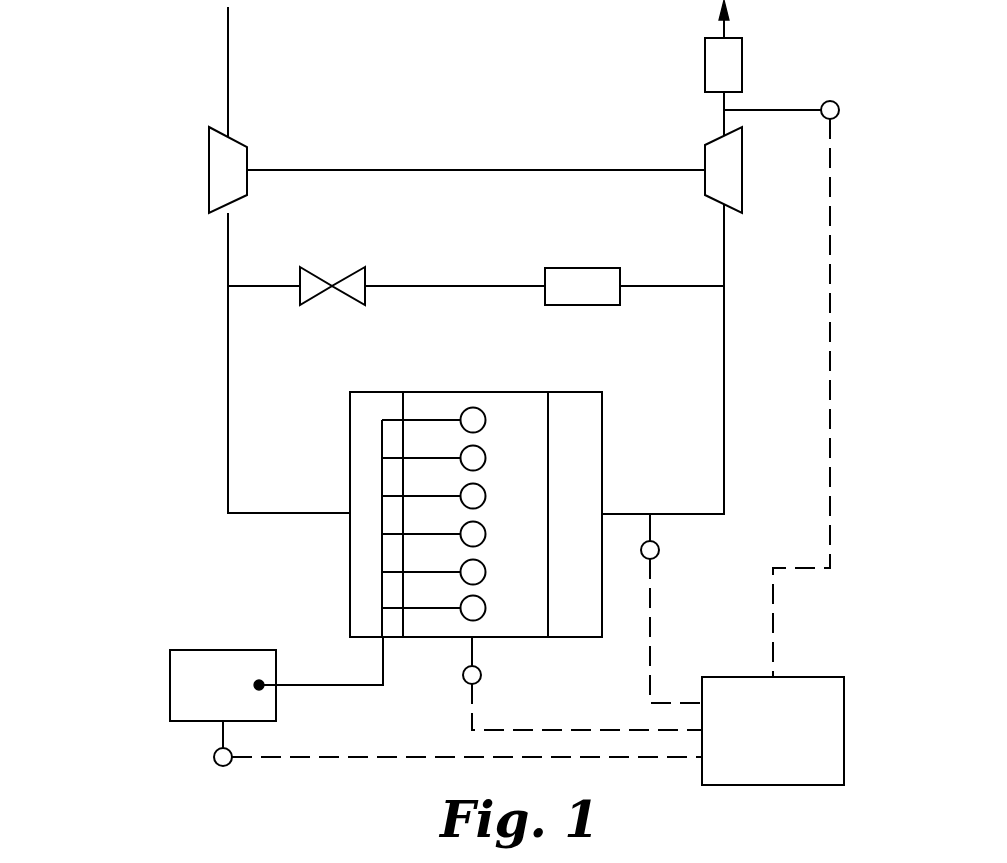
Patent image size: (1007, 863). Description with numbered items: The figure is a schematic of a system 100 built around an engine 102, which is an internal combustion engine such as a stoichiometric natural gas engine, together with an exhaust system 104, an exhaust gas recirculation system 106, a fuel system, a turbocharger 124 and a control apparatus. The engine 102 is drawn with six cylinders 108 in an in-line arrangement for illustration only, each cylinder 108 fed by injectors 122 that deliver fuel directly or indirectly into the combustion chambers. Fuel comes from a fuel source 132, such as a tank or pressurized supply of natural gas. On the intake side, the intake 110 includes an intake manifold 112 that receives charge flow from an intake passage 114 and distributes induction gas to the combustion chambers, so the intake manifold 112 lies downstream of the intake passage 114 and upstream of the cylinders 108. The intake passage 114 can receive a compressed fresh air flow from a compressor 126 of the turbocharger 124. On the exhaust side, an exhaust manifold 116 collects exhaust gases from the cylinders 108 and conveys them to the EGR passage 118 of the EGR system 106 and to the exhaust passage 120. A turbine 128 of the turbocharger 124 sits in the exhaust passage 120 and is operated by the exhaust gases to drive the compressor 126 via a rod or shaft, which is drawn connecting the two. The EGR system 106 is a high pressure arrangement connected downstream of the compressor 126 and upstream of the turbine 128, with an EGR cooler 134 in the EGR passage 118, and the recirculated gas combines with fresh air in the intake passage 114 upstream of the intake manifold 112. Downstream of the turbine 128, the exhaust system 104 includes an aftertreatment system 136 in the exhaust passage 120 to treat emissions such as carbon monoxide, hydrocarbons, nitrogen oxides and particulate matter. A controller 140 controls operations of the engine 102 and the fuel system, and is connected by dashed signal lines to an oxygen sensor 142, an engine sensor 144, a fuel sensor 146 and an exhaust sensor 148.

The system 100 is at (128, 62).
The engine 102 is at (350, 562).
The exhaust system 104 is at (736, 340).
The exhaust gas recirculation (EGR) system 106 is at (345, 275).
The cylinders 108 is at (487, 420).
The intake 110 is at (228, 47).
The intake manifold 112 is at (360, 425).
The intake passage 114 is at (228, 422).
The exhaust manifold 116 is at (582, 427).
The EGR passage 118 is at (655, 288).
The exhaust passage 120 is at (725, 467).
The injectors 122 is at (419, 405).
The turbocharger 124 is at (468, 132).
The compressor 126 is at (209, 160).
The turbine 128 is at (705, 152).
The fuel source 132 is at (170, 678).
The EGR cooler 134 is at (555, 268).
The aftertreatment system 136 is at (742, 60).
The controller 140 is at (844, 723).
The oxygen sensor 142 is at (659, 555).
The engine sensor 144 is at (481, 677).
The fuel sensor 146 is at (214, 752).
The exhaust sensor 148 is at (838, 115).